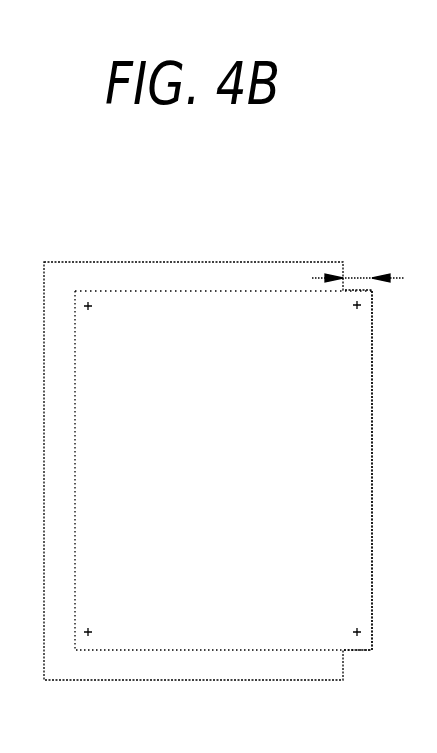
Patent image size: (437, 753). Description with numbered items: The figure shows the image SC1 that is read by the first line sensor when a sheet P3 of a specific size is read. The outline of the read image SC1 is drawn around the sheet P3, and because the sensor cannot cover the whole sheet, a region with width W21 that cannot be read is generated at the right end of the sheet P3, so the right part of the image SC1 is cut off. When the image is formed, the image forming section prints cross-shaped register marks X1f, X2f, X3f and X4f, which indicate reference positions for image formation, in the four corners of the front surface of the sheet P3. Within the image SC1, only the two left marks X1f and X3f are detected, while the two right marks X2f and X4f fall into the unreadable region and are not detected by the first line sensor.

The image SC1 is at (153, 262).
The sheet P3 is at (374, 483).
The width W21 is at (357, 290).
The cross-shaped mark X1f is at (92, 307).
The cross-shaped mark X2f is at (352, 307).
The cross-shaped mark X3f is at (92, 630).
The cross-shaped mark X4f is at (352, 631).